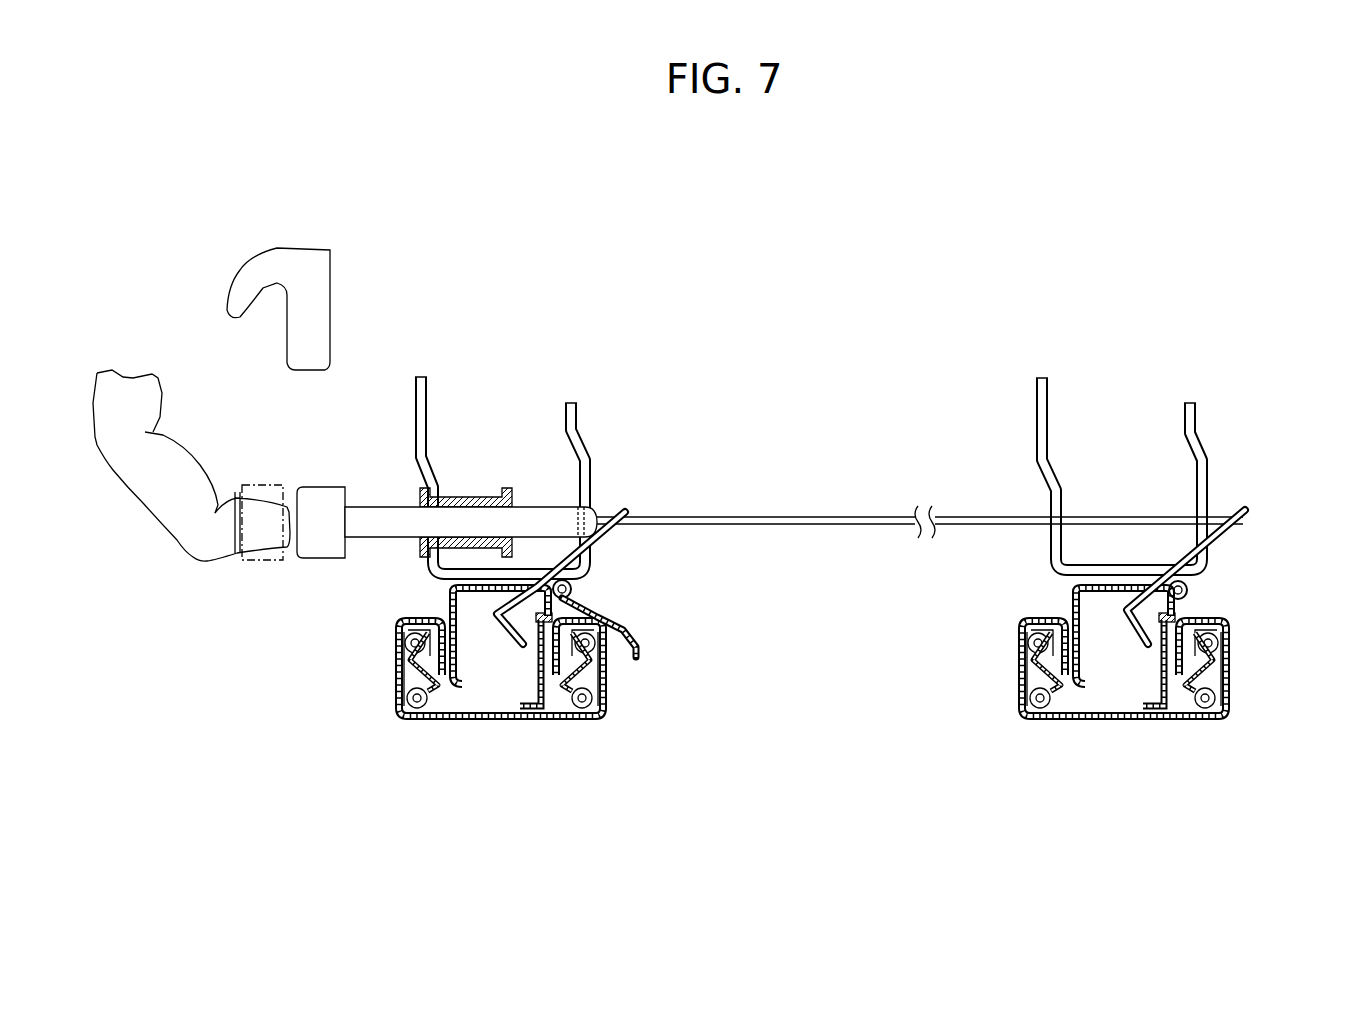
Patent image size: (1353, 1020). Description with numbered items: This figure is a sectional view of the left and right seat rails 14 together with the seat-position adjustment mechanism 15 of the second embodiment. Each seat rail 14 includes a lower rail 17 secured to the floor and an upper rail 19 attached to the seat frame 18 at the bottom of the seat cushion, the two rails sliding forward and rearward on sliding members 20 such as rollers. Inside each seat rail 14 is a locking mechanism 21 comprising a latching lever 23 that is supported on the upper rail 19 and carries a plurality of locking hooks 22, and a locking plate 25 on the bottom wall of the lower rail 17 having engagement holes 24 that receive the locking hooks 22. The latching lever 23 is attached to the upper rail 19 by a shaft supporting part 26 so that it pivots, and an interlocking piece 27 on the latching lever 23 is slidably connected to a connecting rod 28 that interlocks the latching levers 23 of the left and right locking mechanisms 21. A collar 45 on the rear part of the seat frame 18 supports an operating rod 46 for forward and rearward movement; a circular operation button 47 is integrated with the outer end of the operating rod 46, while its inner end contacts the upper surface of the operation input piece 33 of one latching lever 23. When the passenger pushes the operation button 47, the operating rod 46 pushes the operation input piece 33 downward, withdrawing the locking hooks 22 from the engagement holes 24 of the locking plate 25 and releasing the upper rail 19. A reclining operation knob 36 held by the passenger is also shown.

The seat rail 14 is at (414, 727).
The carriage 15 is at (619, 408).
The lower rail 17 is at (437, 720).
The seat frame 18 is at (580, 435).
The upper rail 19 is at (461, 678).
The sliding members 20 is at (416, 698).
The locking mechanism 21 is at (658, 632).
The locking hooks 22 is at (518, 648).
The latching lever 23 is at (497, 610).
The engagement holes 24 is at (552, 656).
The locking plate 25 is at (553, 712).
The shaft supporting part 26 is at (572, 589).
The interlocking piece 27 is at (617, 510).
The connecting rod 28 is at (760, 517).
The operation input piece 33 is at (640, 650).
The reclining operation knob 36 is at (322, 308).
The collar 45 is at (460, 492).
The operating rod 46 is at (545, 514).
The operation button 47 is at (262, 487).